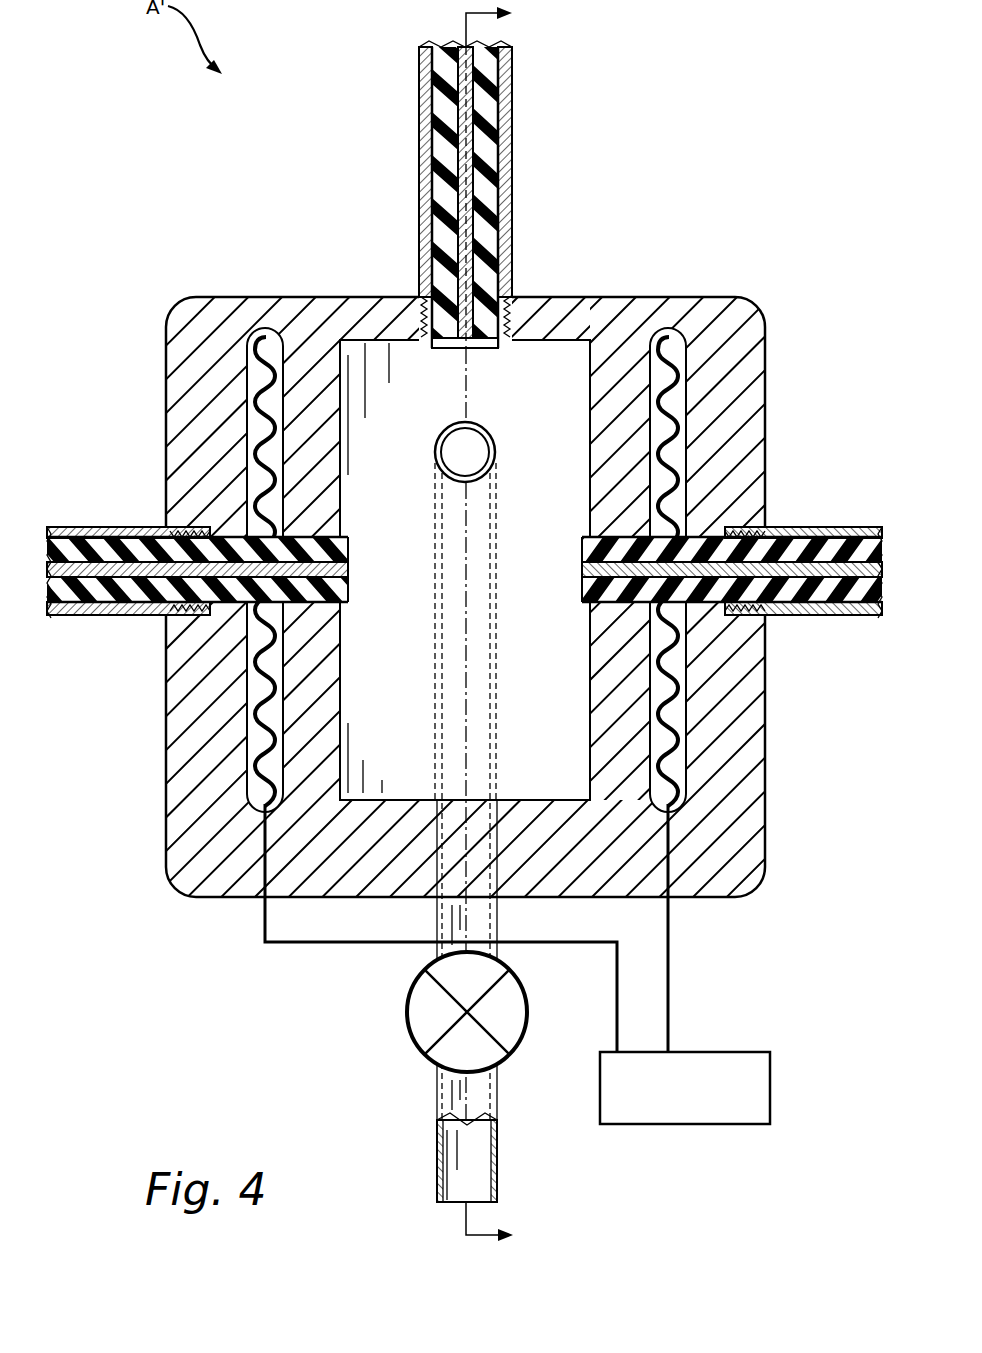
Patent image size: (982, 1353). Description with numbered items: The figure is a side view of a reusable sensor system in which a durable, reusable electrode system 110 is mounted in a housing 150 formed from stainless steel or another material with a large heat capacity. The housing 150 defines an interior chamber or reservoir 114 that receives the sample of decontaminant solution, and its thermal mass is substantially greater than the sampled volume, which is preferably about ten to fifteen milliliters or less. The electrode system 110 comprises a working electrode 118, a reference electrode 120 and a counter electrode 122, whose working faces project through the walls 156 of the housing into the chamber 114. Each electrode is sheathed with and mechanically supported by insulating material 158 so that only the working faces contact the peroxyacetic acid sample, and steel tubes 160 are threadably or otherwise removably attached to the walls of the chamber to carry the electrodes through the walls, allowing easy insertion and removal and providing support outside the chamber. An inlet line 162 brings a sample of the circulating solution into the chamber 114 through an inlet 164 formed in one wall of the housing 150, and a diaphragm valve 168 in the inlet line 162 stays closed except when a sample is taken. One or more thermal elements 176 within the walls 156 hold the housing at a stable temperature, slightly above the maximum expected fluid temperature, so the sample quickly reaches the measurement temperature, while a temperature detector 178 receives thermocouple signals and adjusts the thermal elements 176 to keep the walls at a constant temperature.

The electrode system 110 is at (434, 196).
The housing 150 is at (491, 676).
The walls 156 is at (182, 450).
The insulating material 158 is at (114, 593).
The steel tubes 160 is at (118, 527).
The reference electrode 120 is at (475, 350).
The working electrode 118 is at (350, 575).
The counter electrode 122 is at (582, 570).
The chamber 114 is at (410, 741).
The inlet 164 is at (480, 470).
The thermal elements 176 is at (265, 700).
The diaphragm valve 168 is at (410, 1040).
The inlet line 162 is at (452, 1165).
The temperature detector 178 is at (772, 1085).